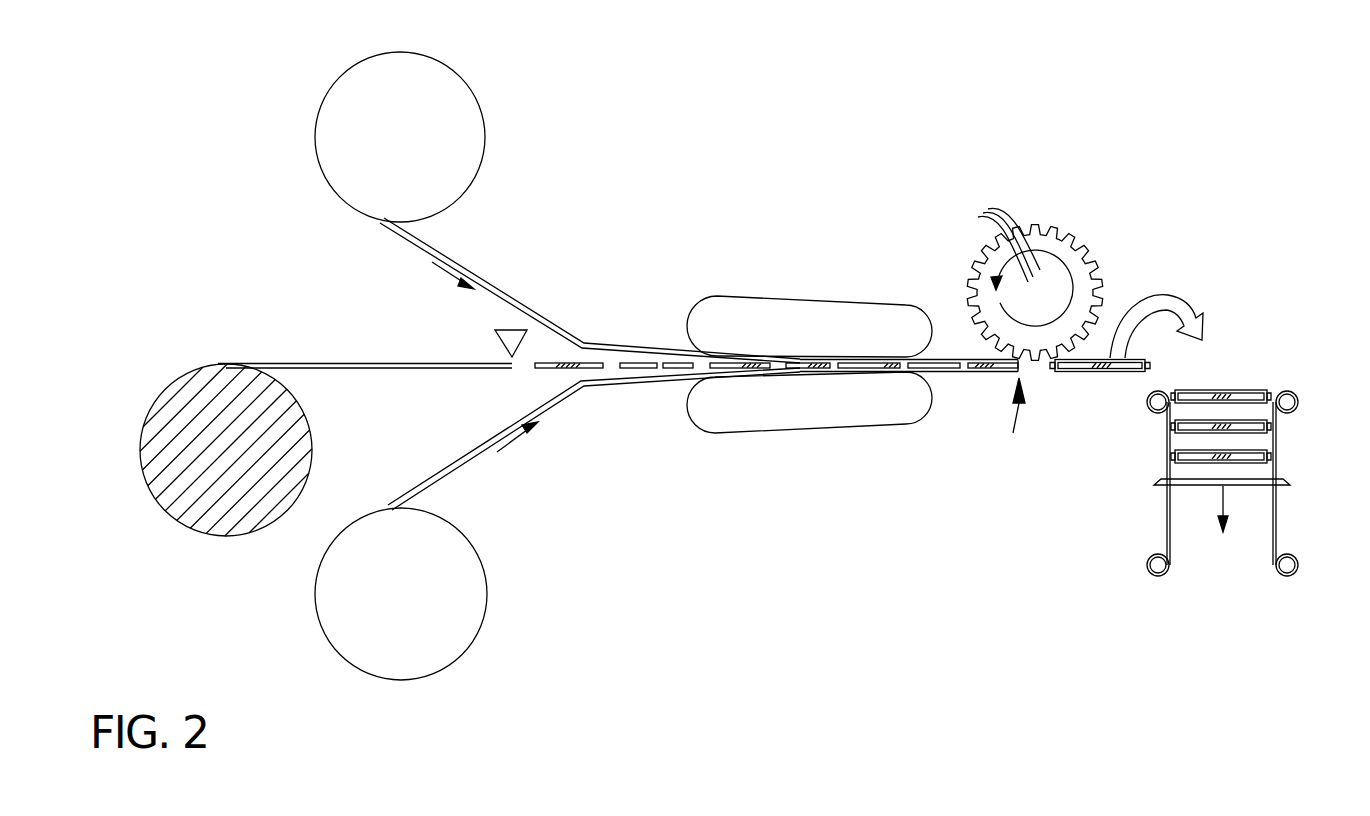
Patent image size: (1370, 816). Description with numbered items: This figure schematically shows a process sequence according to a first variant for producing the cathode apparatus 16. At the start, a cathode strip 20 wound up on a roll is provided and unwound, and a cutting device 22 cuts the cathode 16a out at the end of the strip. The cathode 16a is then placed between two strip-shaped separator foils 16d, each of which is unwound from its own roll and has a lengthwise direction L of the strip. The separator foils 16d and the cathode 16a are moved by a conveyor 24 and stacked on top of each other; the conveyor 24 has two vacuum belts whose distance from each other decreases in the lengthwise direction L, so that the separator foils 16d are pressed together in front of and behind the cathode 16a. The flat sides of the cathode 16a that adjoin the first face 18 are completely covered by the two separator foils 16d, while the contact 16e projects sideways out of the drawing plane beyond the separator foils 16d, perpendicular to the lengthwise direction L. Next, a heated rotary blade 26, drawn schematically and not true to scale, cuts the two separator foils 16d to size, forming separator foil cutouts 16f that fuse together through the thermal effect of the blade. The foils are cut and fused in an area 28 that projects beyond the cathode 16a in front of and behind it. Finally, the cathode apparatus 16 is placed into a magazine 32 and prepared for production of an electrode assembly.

The cathode apparatus 16 is at (1230, 384).
The cathode 16a is at (632, 363).
The separator foils 16d is at (502, 293).
The contact 16e is at (737, 363).
The separator foil cutouts 16f is at (1078, 358).
The first face 18 is at (954, 365).
The cathode strip 20 is at (325, 365).
The cutting device 22 is at (503, 342).
The conveyor 24 is at (855, 307).
The heated rotary blade 26 is at (1036, 225).
The area 28 is at (1012, 423).
The magazine 32 is at (1274, 443).
The lengthwise direction of the strip L is at (451, 273).